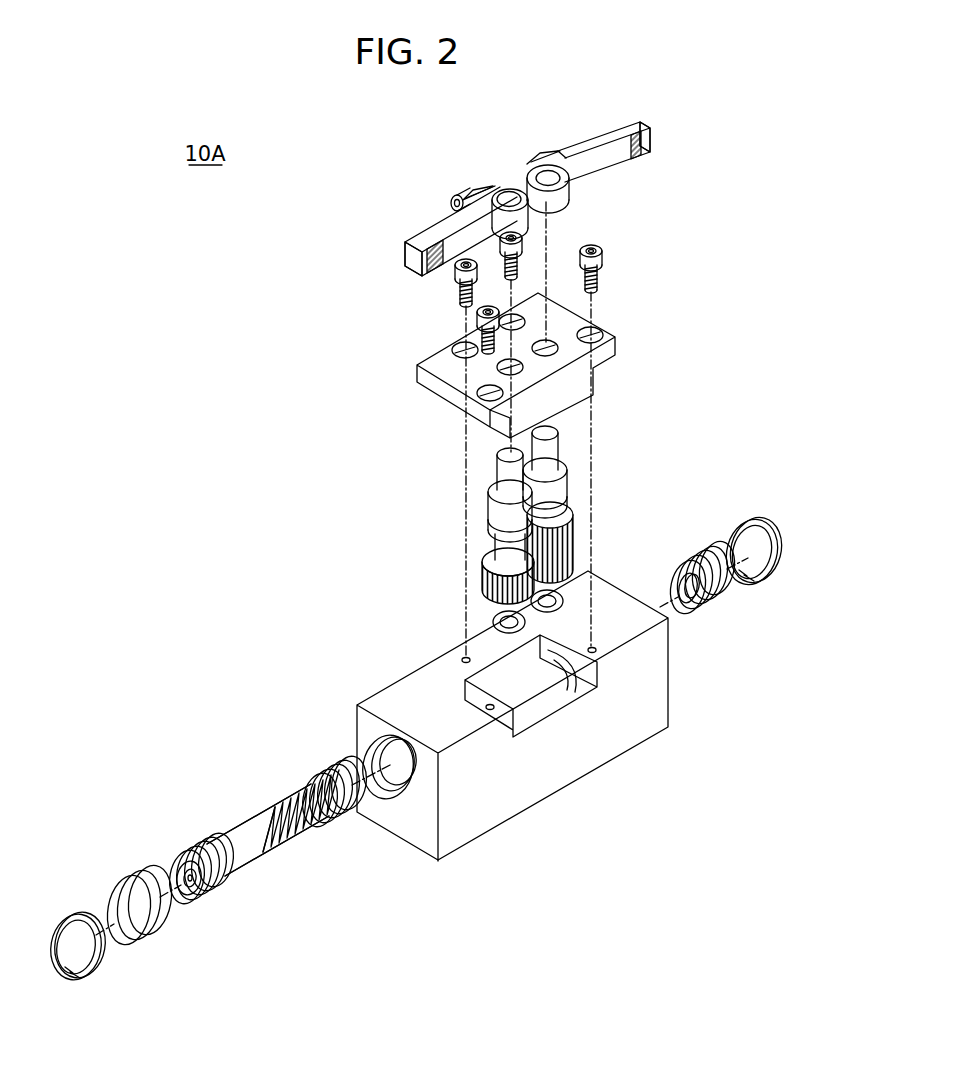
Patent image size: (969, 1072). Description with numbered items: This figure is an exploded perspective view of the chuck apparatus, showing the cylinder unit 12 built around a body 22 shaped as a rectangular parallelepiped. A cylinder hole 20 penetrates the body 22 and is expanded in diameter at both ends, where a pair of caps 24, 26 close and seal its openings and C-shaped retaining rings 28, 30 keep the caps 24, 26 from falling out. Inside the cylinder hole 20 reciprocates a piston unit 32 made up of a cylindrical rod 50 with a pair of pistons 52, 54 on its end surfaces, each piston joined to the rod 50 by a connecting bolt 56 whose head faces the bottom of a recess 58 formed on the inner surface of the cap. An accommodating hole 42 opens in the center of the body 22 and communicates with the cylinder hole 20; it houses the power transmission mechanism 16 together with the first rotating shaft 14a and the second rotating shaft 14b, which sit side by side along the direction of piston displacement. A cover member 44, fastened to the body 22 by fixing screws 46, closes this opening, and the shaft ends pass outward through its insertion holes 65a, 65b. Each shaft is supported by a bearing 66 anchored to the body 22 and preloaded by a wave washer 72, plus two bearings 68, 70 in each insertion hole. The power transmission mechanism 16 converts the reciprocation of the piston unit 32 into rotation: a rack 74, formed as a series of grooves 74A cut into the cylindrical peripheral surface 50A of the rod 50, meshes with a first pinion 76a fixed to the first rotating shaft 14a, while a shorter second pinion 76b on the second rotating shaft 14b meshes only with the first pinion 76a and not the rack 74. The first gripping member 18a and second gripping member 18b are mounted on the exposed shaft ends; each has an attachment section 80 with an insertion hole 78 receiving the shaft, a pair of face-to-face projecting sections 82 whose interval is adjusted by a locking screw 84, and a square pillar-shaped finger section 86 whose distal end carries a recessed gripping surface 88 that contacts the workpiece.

The cylinder unit 12 is at (397, 673).
The first rotating shaft 14a is at (557, 448).
The second rotating shaft 14b is at (497, 470).
The power transmission mechanism 16 is at (584, 506).
The first gripping member 18a is at (619, 120).
The second gripping member 18b is at (403, 253).
The cylinder hole 20 is at (393, 795).
The body 22 is at (612, 742).
The cap 24 is at (722, 598).
The cap 26 is at (143, 932).
The retaining ring 28 is at (757, 588).
The retaining ring 30 is at (83, 979).
The piston unit 32 is at (230, 827).
The accommodating hole 42 is at (522, 703).
The cover member 44 is at (618, 352).
The fixing screws 46 is at (603, 258).
The rod 50 is at (258, 818).
The cylindrical peripheral surface 50A is at (292, 808).
The piston 52 is at (333, 765).
The piston 54 is at (182, 850).
The connecting bolt 56 is at (191, 882).
The recess 58 is at (693, 607).
The insertion hole 65a is at (590, 338).
The insertion hole 65b is at (458, 365).
The bearing 66 is at (578, 597).
The bearing 68 is at (494, 533).
The bearing 70 is at (497, 507).
The wave washer 72 is at (492, 623).
The rack 74 is at (293, 848).
The grooves 74A is at (280, 862).
The first pinion 76a is at (566, 527).
The second pinion 76b is at (484, 580).
The insertion hole 78 is at (560, 178).
The attachment section 80 is at (563, 200).
The projecting sections 82 is at (530, 162).
The locking screw 84 is at (451, 204).
The finger section 86 is at (645, 125).
The gripping surface 88 is at (651, 143).